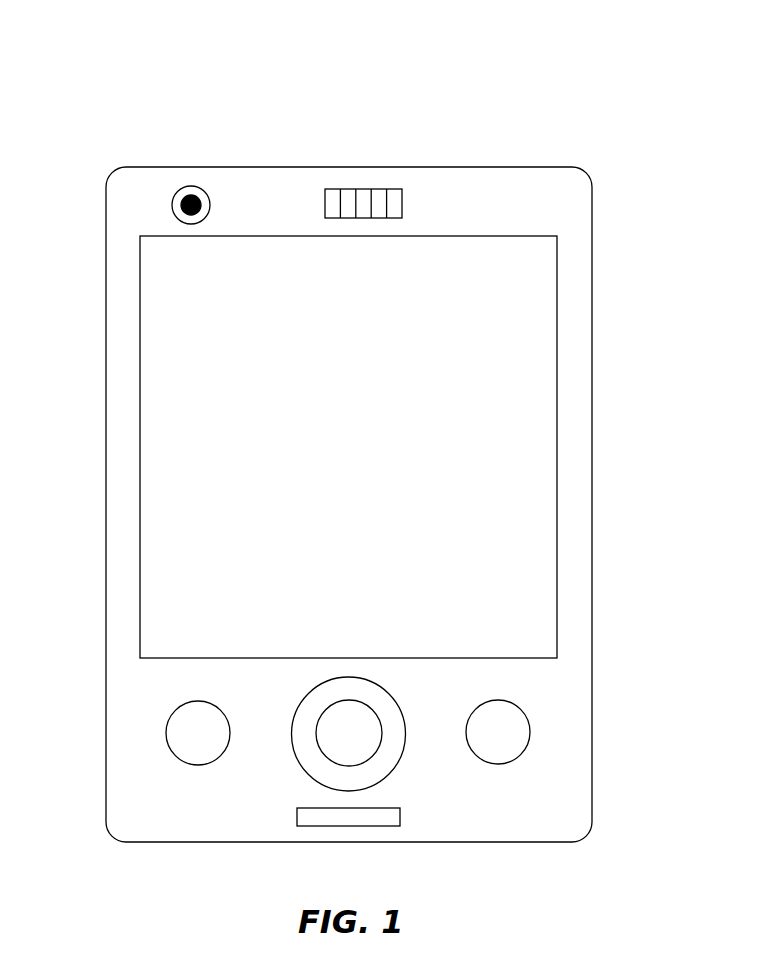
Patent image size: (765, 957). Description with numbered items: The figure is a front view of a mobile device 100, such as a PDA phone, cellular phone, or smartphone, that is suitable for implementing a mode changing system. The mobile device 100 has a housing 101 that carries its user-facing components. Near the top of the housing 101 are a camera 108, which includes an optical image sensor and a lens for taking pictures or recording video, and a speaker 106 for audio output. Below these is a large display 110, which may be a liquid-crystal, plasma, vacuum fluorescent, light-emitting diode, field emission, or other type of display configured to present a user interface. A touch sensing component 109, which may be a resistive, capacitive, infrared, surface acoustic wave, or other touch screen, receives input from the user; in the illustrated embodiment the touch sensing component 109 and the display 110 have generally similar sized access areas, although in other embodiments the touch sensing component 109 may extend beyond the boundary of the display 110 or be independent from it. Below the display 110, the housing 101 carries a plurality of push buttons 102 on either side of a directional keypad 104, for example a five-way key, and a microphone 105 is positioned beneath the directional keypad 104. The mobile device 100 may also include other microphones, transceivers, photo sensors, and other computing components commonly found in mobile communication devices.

The mobile device 100 is at (598, 110).
The housing 101 is at (572, 676).
The push buttons 102 is at (166, 731).
The directional keypad 104 is at (402, 757).
The microphone 105 is at (368, 826).
The speaker 106 is at (362, 189).
The camera 108 is at (195, 188).
The touch sensing component 109 is at (557, 447).
The display 110 is at (530, 365).